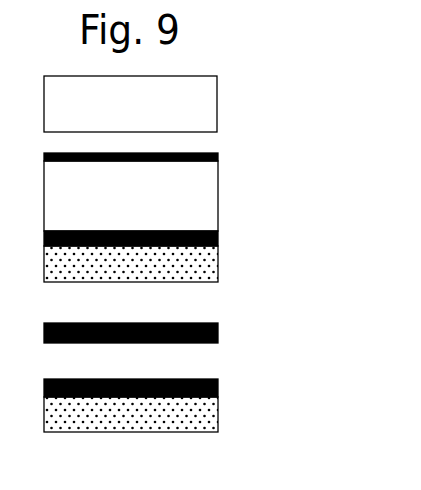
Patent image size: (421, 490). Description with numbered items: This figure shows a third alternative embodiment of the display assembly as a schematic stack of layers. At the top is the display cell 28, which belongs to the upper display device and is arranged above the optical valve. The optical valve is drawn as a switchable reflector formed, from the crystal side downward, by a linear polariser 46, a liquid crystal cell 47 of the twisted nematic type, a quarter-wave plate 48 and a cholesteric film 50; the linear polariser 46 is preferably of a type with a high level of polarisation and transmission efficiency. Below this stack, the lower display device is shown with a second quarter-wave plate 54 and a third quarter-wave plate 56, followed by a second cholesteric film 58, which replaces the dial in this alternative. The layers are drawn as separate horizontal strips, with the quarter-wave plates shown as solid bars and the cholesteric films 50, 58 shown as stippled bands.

The display cell 28 is at (199, 102).
The linear polariser 46 is at (218, 157).
The liquid crystal cell 47 is at (200, 200).
The quarter-wave plate 48 is at (218, 238).
The cholesteric film 50 is at (200, 268).
The second quarter-wave plate 54 is at (218, 332).
The third quarter-wave plate 56 is at (218, 388).
The second cholesteric film 58 is at (200, 418).